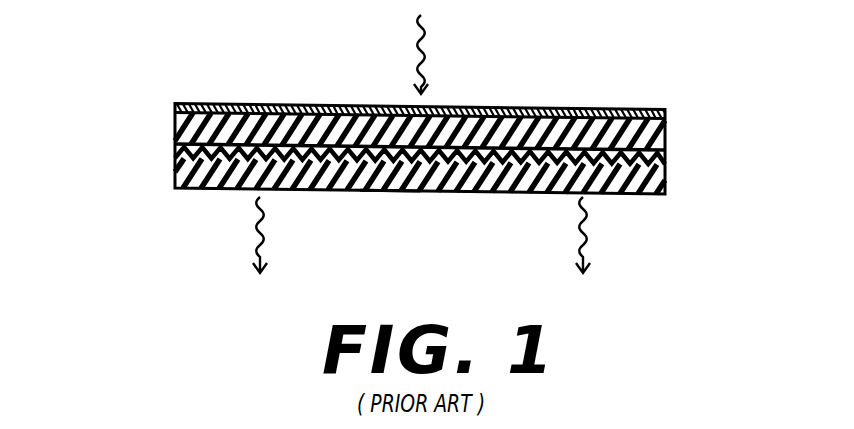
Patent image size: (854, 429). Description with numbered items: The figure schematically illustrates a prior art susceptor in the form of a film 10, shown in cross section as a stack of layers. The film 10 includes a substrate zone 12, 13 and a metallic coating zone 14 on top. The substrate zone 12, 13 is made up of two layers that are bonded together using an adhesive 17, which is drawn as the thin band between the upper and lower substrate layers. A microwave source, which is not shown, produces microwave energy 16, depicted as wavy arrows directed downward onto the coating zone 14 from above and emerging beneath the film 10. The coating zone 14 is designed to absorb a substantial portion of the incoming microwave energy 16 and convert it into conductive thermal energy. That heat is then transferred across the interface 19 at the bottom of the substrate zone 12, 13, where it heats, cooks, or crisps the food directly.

The film 10 is at (112, 97).
The substrate zone layer 12 is at (665, 131).
The substrate zone layer 13 is at (665, 179).
The metallic coating zone 14 is at (665, 112).
The microwave energy 16 is at (423, 251).
The adhesive 17 is at (175, 146).
The interface 19 is at (387, 191).